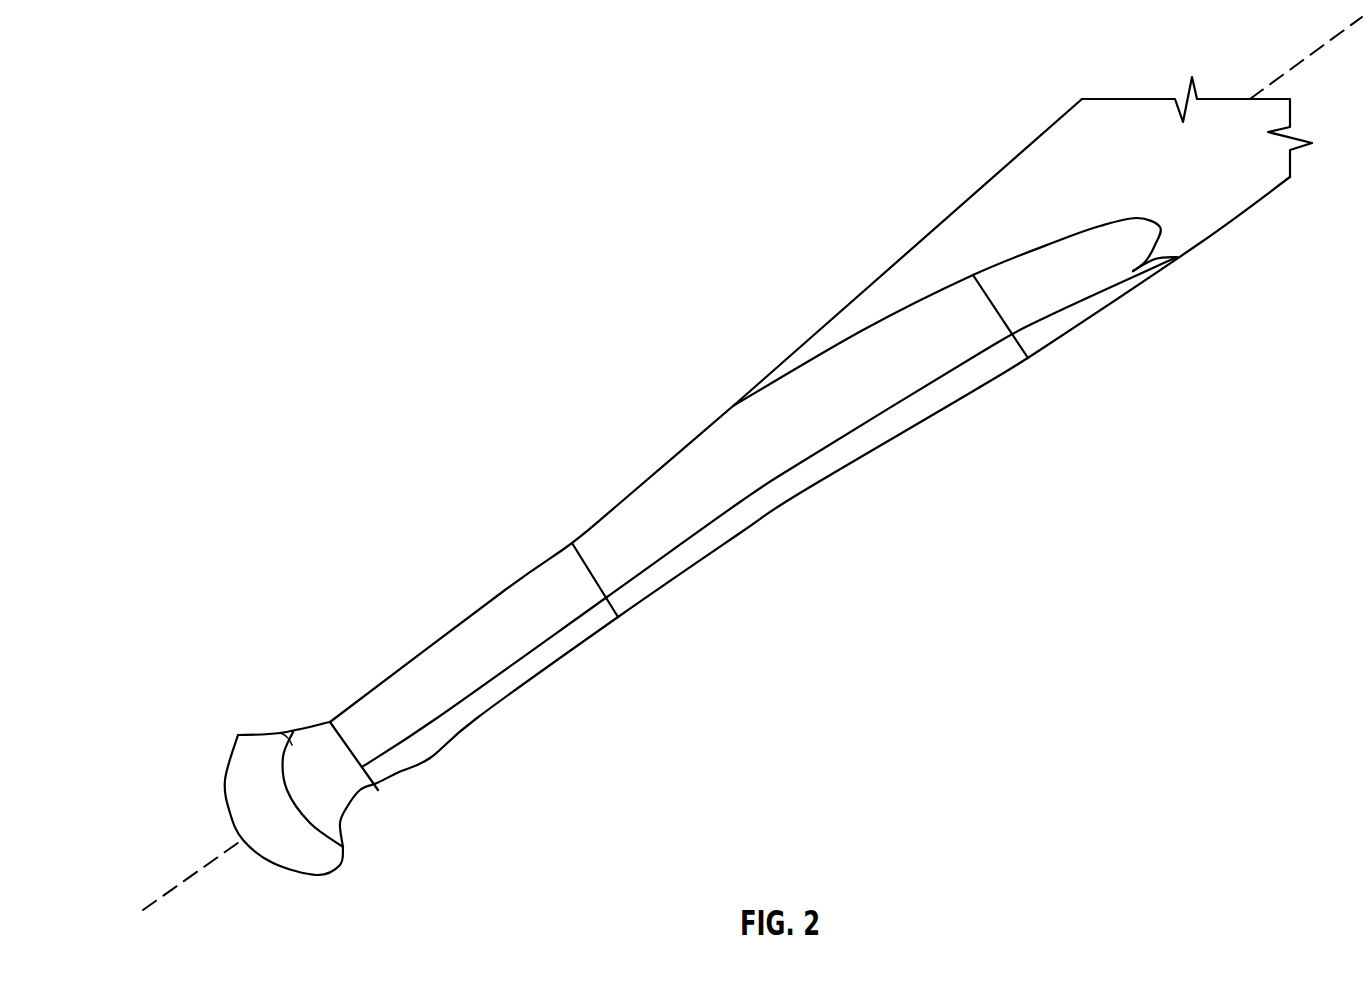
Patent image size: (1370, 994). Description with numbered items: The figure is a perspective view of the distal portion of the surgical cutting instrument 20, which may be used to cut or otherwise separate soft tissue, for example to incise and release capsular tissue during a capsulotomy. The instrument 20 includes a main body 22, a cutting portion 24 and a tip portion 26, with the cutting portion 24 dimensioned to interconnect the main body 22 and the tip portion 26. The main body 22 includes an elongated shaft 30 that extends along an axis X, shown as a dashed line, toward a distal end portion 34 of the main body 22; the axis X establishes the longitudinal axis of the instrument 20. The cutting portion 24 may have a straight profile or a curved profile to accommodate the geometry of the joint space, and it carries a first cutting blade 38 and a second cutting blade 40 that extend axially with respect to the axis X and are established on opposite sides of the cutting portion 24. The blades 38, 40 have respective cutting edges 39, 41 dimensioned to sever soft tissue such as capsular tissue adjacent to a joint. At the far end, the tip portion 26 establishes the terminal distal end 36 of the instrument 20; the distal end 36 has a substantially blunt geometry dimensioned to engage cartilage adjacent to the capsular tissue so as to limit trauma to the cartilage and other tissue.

The surgical instrument 20 is at (370, 283).
The main body 22 is at (998, 172).
The cutting portion 24 is at (607, 412).
The tip portion 26 is at (222, 743).
The elongated shaft 30 is at (1112, 110).
The distal end portion 34 is at (865, 307).
The distal end 36 is at (245, 845).
The first cutting blade 38 is at (535, 561).
The cutting edge 39 is at (505, 590).
The second cutting blade 40 is at (705, 572).
The cutting edge 41 is at (532, 678).
The axis X is at (1317, 50).